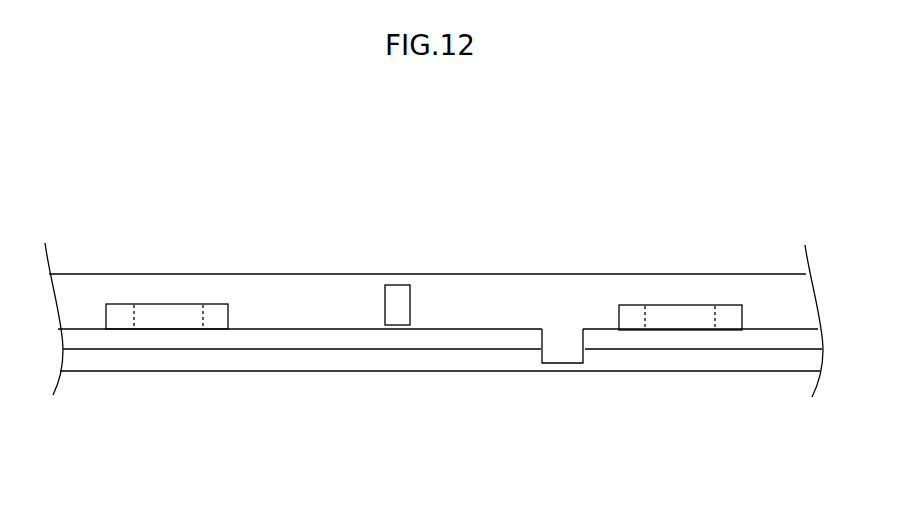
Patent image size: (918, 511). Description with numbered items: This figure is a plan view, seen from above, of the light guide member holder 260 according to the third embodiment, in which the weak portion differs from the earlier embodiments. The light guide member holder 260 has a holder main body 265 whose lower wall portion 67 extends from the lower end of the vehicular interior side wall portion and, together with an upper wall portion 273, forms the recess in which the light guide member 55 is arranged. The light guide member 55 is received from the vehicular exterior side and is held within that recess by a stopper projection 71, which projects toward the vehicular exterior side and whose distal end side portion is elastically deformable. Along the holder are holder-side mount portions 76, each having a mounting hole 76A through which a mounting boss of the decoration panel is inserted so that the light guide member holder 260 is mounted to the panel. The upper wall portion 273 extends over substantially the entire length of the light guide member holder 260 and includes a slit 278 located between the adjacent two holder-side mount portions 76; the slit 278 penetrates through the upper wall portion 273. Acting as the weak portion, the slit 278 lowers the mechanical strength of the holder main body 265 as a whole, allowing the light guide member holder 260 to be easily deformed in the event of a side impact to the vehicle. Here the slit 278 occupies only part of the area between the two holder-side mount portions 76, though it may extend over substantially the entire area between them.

The light guide member holder 260 is at (773, 245).
The holder main body 265 is at (435, 382).
The upper wall portion 273 is at (302, 313).
The lower wall portion 67 is at (248, 360).
The light guide member 55 is at (482, 342).
The stopper projection 71 is at (565, 343).
The holder-side mount portion 76 is at (216, 317).
The mounting hole 76A is at (135, 320).
The slit 278 is at (410, 305).